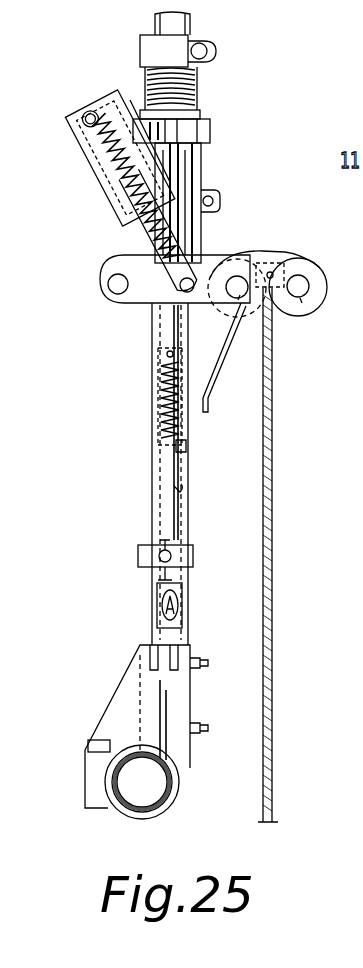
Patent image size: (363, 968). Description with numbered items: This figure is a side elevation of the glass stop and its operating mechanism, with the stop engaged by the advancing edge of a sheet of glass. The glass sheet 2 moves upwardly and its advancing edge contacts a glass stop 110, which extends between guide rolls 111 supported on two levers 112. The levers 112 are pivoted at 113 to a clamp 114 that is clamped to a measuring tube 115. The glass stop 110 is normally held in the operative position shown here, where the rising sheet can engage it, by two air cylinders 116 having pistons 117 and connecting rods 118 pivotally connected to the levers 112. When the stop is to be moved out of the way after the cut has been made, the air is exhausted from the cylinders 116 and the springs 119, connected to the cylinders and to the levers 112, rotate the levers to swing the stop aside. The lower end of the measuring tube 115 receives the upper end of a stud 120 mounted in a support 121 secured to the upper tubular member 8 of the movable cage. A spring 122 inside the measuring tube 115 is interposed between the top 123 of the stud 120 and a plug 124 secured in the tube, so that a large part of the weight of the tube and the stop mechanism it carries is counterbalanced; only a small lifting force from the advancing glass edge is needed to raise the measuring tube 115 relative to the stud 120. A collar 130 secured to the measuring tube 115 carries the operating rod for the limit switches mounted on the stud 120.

The glass sheet 2 is at (272, 430).
The upper tubular member 8 is at (172, 786).
The glass stop 110 is at (290, 254).
The guide rolls 111 is at (296, 326).
The levers 112 is at (214, 264).
The pivot 113 is at (108, 283).
The clamp 114 is at (196, 162).
The measuring tube 115 is at (160, 312).
The air cylinders 116 is at (68, 142).
The pistons 117 is at (118, 183).
The connecting rods 118 is at (156, 234).
The springs 119 is at (138, 192).
The stud 120 is at (181, 486).
The support 121 is at (126, 700).
The spring 122 is at (157, 381).
The top of the stud 123 is at (183, 447).
The plug 124 is at (175, 354).
The collar 130 is at (193, 557).